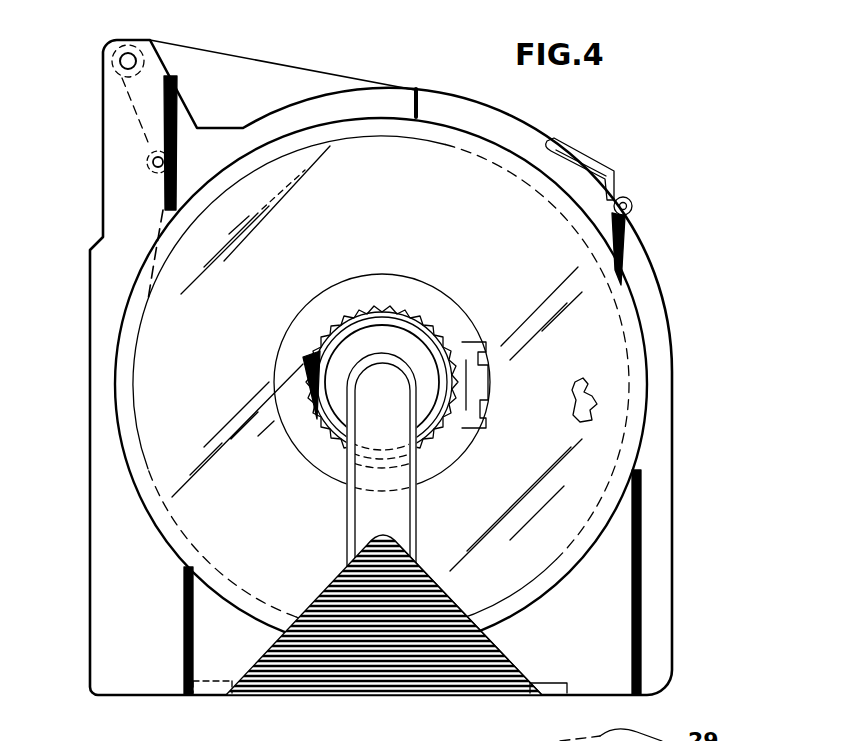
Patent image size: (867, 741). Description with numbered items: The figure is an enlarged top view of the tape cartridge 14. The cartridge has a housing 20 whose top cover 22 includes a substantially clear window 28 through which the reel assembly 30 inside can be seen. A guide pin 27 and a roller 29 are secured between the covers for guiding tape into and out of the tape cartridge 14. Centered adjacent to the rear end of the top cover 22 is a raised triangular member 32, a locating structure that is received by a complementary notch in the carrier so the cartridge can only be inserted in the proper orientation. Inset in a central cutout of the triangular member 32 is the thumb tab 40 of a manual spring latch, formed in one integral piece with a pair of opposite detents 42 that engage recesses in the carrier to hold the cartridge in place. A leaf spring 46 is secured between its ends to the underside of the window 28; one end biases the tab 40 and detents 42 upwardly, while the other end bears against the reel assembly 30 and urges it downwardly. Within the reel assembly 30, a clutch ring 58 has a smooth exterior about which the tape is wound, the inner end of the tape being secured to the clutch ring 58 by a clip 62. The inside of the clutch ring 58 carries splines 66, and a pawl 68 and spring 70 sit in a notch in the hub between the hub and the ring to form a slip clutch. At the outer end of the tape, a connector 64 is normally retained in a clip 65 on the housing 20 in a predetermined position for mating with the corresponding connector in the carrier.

The tape cartridge 14 is at (667, 231).
The housing 20 is at (673, 387).
The top cover 22 is at (650, 558).
The guide pin 27 is at (153, 167).
The window 28 is at (598, 332).
The roller 29 is at (116, 70).
The reel assembly 30 is at (590, 408).
The raised triangular member 32 is at (500, 653).
The thumb tab 40 is at (350, 657).
The detents 42 is at (205, 697).
The leaf spring 46 is at (377, 508).
The clutch ring 58 is at (463, 313).
The clip 62 is at (487, 397).
The connector 64 is at (631, 200).
The clip 65 is at (596, 163).
The splines 66 is at (378, 312).
The pawl 68 is at (301, 382).
The spring 70 is at (322, 388).